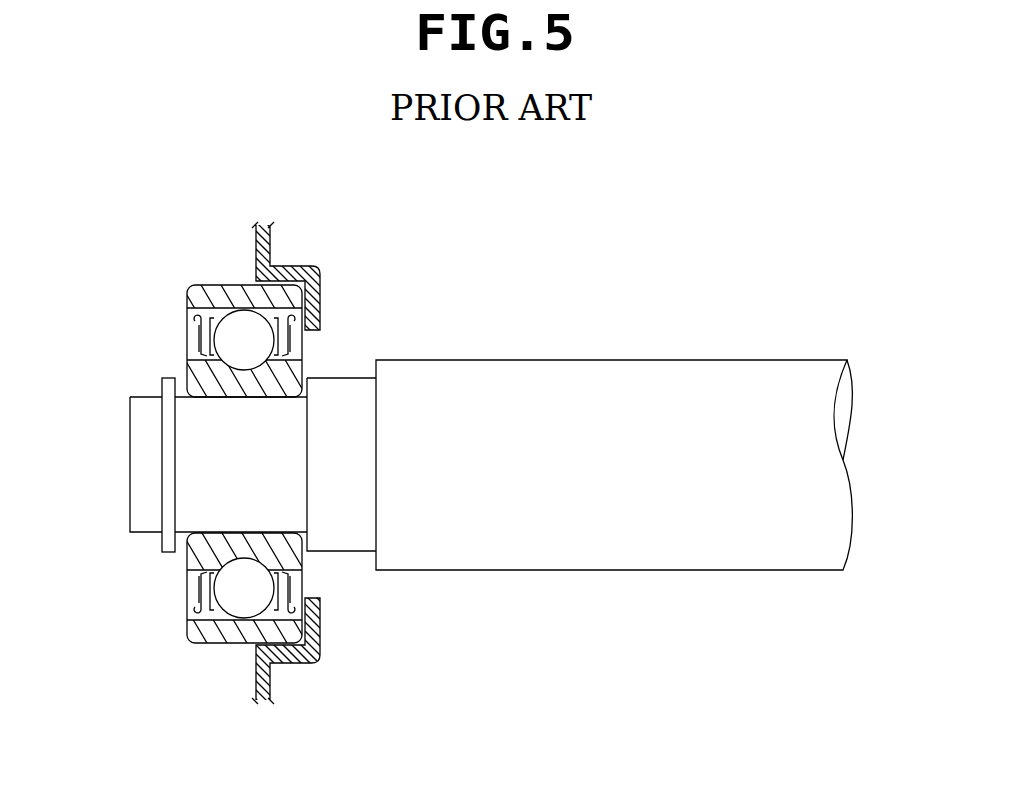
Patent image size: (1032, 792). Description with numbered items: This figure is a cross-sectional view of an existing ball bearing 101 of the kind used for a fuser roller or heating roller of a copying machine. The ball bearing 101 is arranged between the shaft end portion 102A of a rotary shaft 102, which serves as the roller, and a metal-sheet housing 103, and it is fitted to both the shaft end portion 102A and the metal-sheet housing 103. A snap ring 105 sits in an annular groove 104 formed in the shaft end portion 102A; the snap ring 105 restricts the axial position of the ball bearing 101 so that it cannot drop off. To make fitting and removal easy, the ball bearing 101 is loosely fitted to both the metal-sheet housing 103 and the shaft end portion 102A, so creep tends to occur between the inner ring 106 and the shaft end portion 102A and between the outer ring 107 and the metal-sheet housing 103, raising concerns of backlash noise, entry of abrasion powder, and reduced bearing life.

The ball bearing 101 is at (244, 434).
The rotary shaft 102 is at (706, 358).
The shaft end portion 102A is at (288, 500).
The metal-sheet housing 103 is at (255, 262).
The annular groove 104 is at (165, 540).
The snap ring 105 is at (163, 385).
The inner ring 106 is at (292, 375).
The outer ring 107 is at (275, 434).